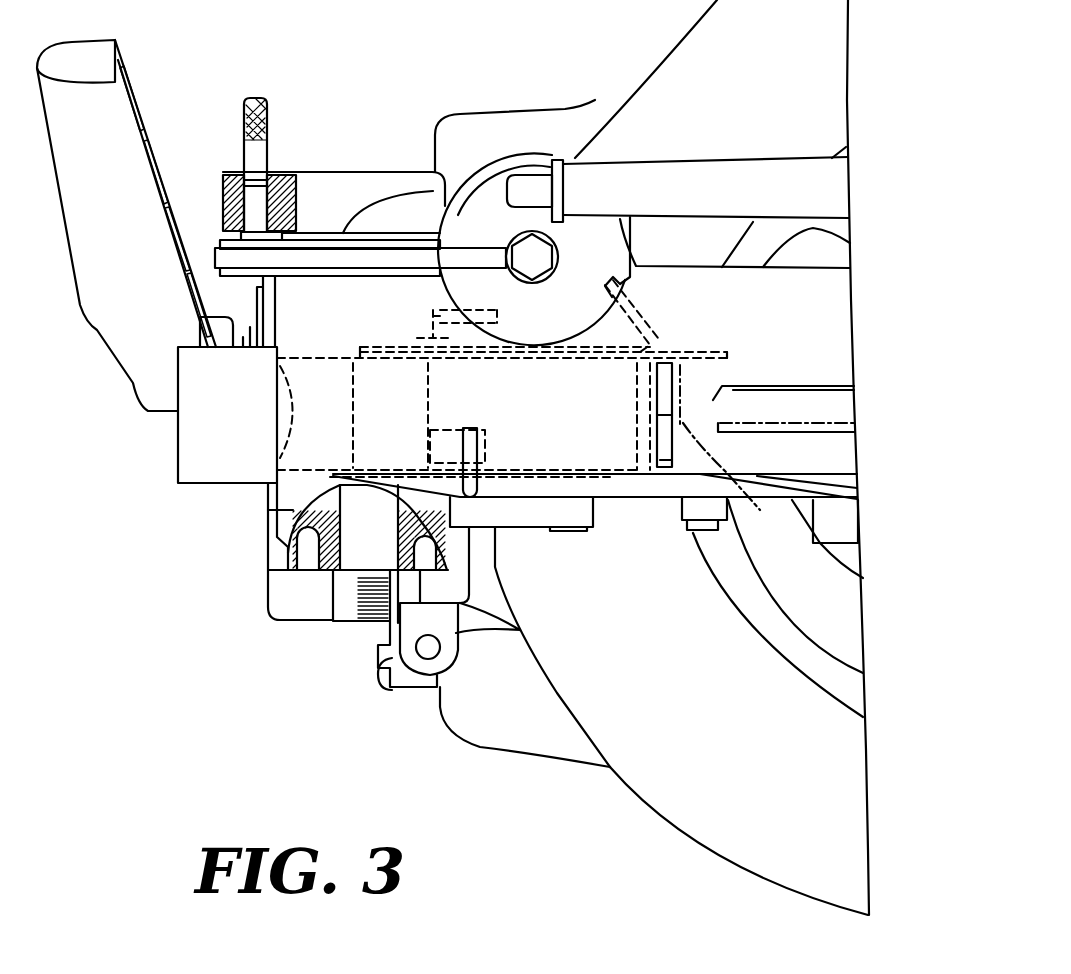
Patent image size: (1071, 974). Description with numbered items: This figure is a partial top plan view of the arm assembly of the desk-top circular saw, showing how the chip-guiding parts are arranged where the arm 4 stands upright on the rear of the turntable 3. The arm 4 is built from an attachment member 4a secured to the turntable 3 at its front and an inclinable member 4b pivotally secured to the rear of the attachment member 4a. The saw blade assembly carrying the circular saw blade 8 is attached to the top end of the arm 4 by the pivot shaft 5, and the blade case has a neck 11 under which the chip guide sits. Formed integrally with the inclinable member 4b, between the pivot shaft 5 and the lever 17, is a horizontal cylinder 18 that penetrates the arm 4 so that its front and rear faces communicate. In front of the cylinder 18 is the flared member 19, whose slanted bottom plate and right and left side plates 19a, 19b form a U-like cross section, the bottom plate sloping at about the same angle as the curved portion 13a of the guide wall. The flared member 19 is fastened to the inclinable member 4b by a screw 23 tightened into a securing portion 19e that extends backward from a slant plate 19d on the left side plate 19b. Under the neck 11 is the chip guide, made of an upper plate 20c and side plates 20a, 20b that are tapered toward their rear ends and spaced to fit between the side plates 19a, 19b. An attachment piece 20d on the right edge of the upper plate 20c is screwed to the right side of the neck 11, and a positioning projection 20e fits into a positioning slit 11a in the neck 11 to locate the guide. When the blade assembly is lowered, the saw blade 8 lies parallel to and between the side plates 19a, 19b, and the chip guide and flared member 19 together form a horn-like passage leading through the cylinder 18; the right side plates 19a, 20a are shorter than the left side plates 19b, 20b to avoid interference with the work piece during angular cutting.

The turntable 3 is at (672, 62).
The arm 4 is at (308, 617).
The attachment member 4a is at (455, 592).
The inclinable member 4b is at (278, 583).
The pivot shaft 5 is at (365, 525).
The circular saw blade 8 is at (830, 430).
The neck 11 is at (680, 267).
The positioning slit 11a is at (681, 428).
The curved portion 13a is at (820, 615).
The lever 17 is at (93, 123).
The horizontal cylinder 18 is at (182, 428).
The flared member 19 is at (712, 482).
The right side plate 19a is at (607, 475).
The left side plate 19b is at (653, 354).
The slant plate 19d is at (647, 323).
The securing portion 19e is at (567, 306).
The right side plate of chip guide 20a is at (667, 468).
The left side plate of chip guide 20b is at (724, 356).
The upper plate 20c is at (278, 457).
The attachment piece 20d is at (485, 447).
The positioning projection 20e is at (668, 413).
The screw 23 is at (427, 317).